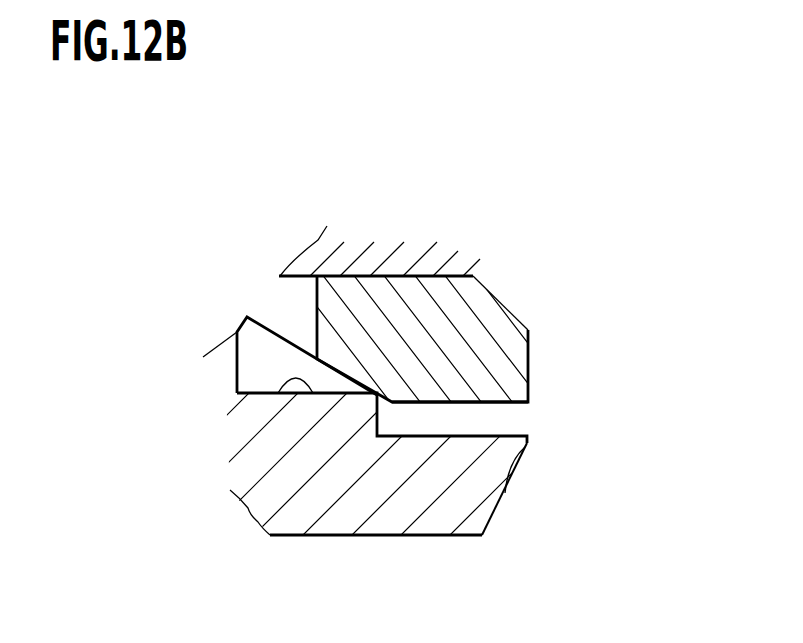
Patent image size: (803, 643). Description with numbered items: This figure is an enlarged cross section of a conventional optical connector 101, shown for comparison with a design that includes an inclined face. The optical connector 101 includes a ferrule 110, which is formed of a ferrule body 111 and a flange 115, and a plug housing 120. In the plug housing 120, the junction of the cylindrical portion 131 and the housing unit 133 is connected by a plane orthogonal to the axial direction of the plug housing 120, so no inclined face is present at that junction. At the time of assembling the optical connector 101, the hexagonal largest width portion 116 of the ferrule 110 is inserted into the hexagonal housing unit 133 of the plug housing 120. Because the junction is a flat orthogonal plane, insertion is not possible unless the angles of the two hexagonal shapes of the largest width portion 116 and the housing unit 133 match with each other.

The optical connector 101 is at (434, 200).
The ferrule 110 is at (613, 180).
The ferrule body 111 is at (431, 260).
The flange 115 is at (478, 309).
The hexagonal largest width portion 116 is at (518, 405).
The plug housing 120 is at (362, 537).
The cylindrical portion 131 is at (483, 436).
The housing unit 133 is at (240, 432).